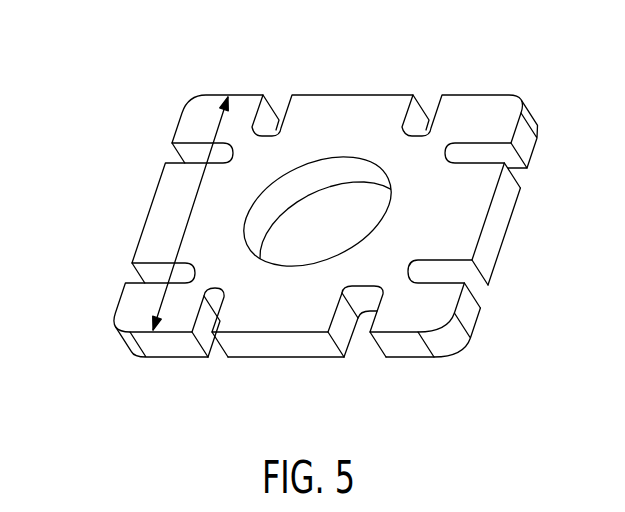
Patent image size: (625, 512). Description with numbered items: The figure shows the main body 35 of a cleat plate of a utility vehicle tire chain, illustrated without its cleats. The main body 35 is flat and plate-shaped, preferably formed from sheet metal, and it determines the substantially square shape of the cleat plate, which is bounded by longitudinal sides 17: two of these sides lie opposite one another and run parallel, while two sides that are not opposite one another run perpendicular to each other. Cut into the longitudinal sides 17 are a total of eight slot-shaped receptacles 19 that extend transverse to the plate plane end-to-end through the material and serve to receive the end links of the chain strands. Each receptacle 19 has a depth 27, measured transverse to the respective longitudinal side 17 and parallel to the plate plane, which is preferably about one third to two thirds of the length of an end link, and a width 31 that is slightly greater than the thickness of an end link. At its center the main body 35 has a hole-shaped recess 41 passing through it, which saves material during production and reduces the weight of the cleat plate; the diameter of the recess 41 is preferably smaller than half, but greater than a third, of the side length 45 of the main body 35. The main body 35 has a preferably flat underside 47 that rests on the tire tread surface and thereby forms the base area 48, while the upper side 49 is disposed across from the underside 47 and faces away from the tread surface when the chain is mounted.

The longitudinal side 17 is at (272, 345).
The receptacle 19 is at (279, 88).
The depth 27 is at (347, 287).
The width 31 is at (386, 284).
The main body 35 is at (459, 382).
The recess 41 is at (340, 235).
The side length 45 is at (213, 127).
The underside 47 is at (469, 359).
The base area 48 is at (484, 332).
The upper side 49 is at (447, 217).